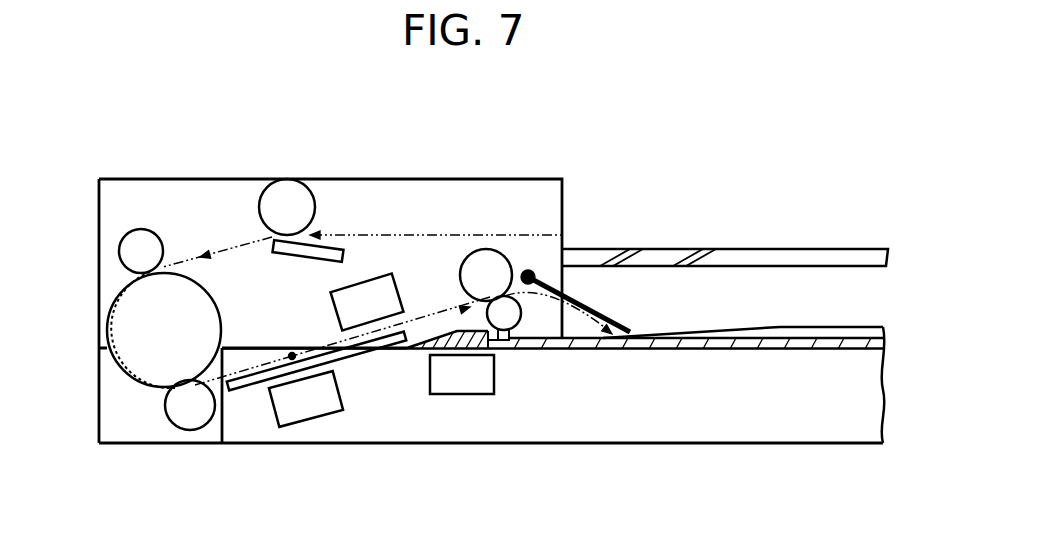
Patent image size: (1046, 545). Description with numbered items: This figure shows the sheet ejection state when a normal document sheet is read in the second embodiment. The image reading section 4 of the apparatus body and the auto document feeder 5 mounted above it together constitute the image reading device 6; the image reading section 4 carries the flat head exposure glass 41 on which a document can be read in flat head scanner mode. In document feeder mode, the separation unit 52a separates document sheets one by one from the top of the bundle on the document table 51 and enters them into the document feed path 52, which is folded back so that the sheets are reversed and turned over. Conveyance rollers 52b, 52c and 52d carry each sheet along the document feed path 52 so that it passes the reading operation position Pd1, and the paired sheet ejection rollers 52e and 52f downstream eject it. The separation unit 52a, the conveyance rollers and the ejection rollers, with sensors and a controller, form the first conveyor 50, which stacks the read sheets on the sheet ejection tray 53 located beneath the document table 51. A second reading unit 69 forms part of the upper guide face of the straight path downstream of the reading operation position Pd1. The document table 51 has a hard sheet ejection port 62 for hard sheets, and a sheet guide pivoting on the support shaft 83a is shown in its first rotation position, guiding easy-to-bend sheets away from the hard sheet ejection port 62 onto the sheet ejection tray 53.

The image reading section 4 is at (838, 443).
The auto document feeder 5 is at (214, 208).
The image reading device 6 is at (82, 364).
The flat head exposure glass 41 is at (801, 337).
The first conveyor 50 is at (322, 193).
The document table 51 is at (858, 249).
The document feed path 52 is at (438, 236).
The separation unit 52a is at (273, 237).
The conveyance roller 52b is at (127, 236).
The conveyance roller 52c is at (124, 312).
The conveyance roller 52d is at (196, 430).
The sheet ejection roller 52e is at (490, 250).
The sheet ejection roller 52f is at (519, 322).
The sheet ejection tray 53 is at (858, 327).
The hard sheet ejection port 62 is at (688, 262).
The second reading unit 69 is at (397, 282).
The support shaft 83a is at (528, 272).
The reading operation position Pd1 is at (290, 352).